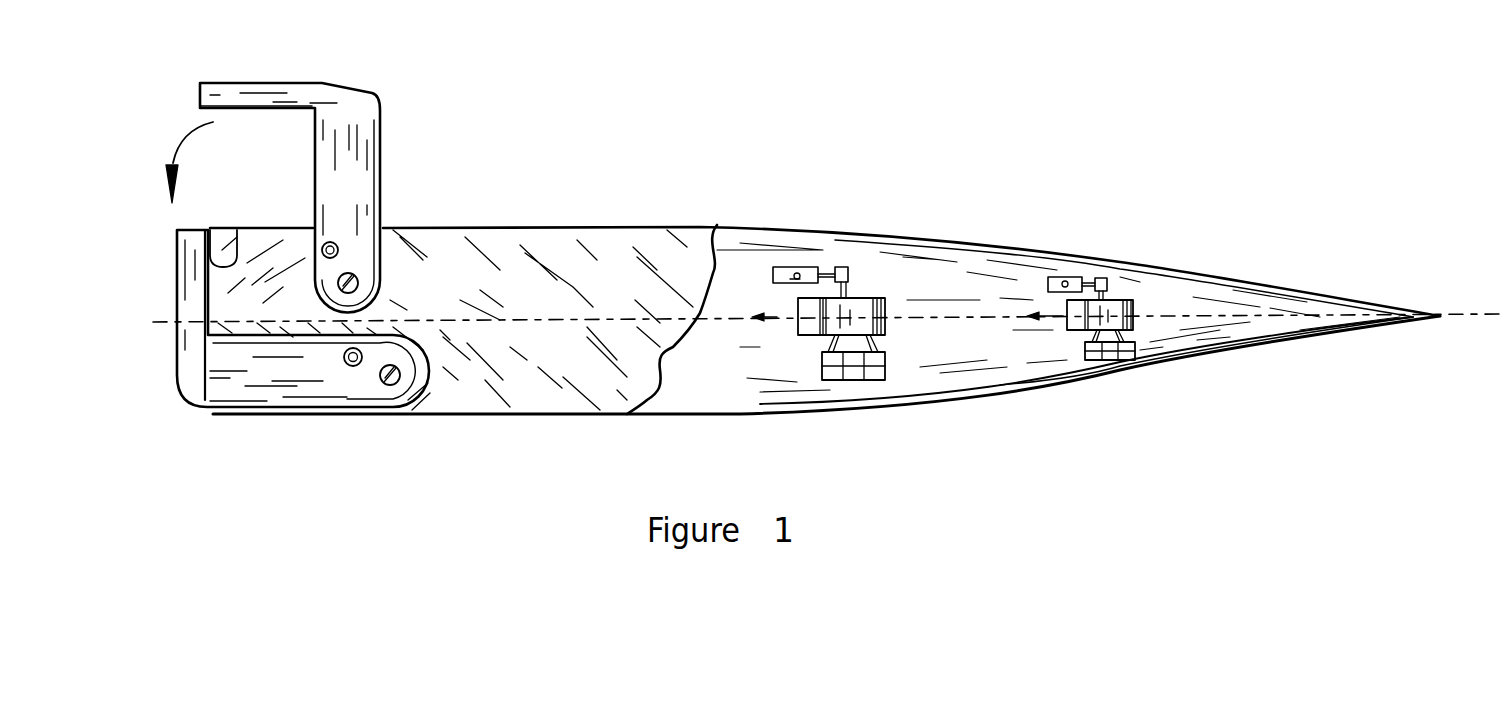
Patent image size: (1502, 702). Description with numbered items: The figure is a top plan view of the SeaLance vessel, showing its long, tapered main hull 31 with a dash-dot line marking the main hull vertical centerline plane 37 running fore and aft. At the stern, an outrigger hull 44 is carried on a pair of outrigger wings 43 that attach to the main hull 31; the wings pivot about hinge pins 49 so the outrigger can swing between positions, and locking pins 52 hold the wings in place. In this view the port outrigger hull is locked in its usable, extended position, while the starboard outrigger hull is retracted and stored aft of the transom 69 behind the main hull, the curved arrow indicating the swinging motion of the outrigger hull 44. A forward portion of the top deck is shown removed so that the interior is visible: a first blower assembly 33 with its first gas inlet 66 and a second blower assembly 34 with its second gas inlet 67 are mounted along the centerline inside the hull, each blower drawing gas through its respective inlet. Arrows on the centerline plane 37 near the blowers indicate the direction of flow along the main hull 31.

The main hull 31 is at (635, 226).
The first blower assembly 33 is at (1137, 310).
The second blower assembly 34 is at (860, 310).
The main hull vertical centerline plane 37 is at (953, 318).
The outrigger wings 43 is at (347, 113).
The outrigger hull 44 is at (290, 108).
The hinge pins 49 is at (360, 285).
The locking pins 52 is at (338, 245).
The first gas inlet 66 is at (1135, 345).
The second gas inlet 67 is at (883, 357).
The transom 69 is at (237, 257).